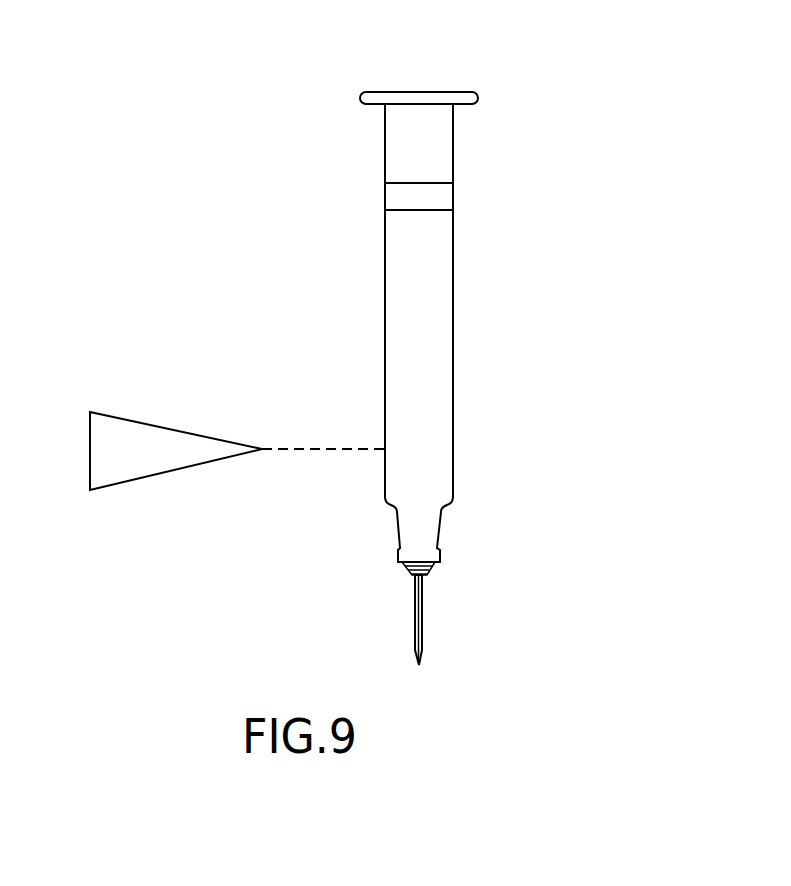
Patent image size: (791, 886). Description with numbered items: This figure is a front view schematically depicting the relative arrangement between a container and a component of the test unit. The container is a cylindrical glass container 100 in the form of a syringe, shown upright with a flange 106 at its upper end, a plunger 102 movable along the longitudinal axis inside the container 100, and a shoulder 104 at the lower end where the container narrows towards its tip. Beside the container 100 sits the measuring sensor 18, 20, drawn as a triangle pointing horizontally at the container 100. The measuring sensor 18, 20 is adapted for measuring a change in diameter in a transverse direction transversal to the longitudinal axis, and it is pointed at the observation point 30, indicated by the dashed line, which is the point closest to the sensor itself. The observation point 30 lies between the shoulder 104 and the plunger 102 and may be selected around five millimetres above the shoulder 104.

The cylindrical glass container 100 is at (454, 375).
The plunger 102 is at (423, 183).
The shoulder 104 is at (447, 500).
The barrel flange 106 is at (466, 92).
The observation point 30 is at (384, 450).
The measuring sensor 18 is at (161, 364).
The measuring sensor 20 is at (160, 426).